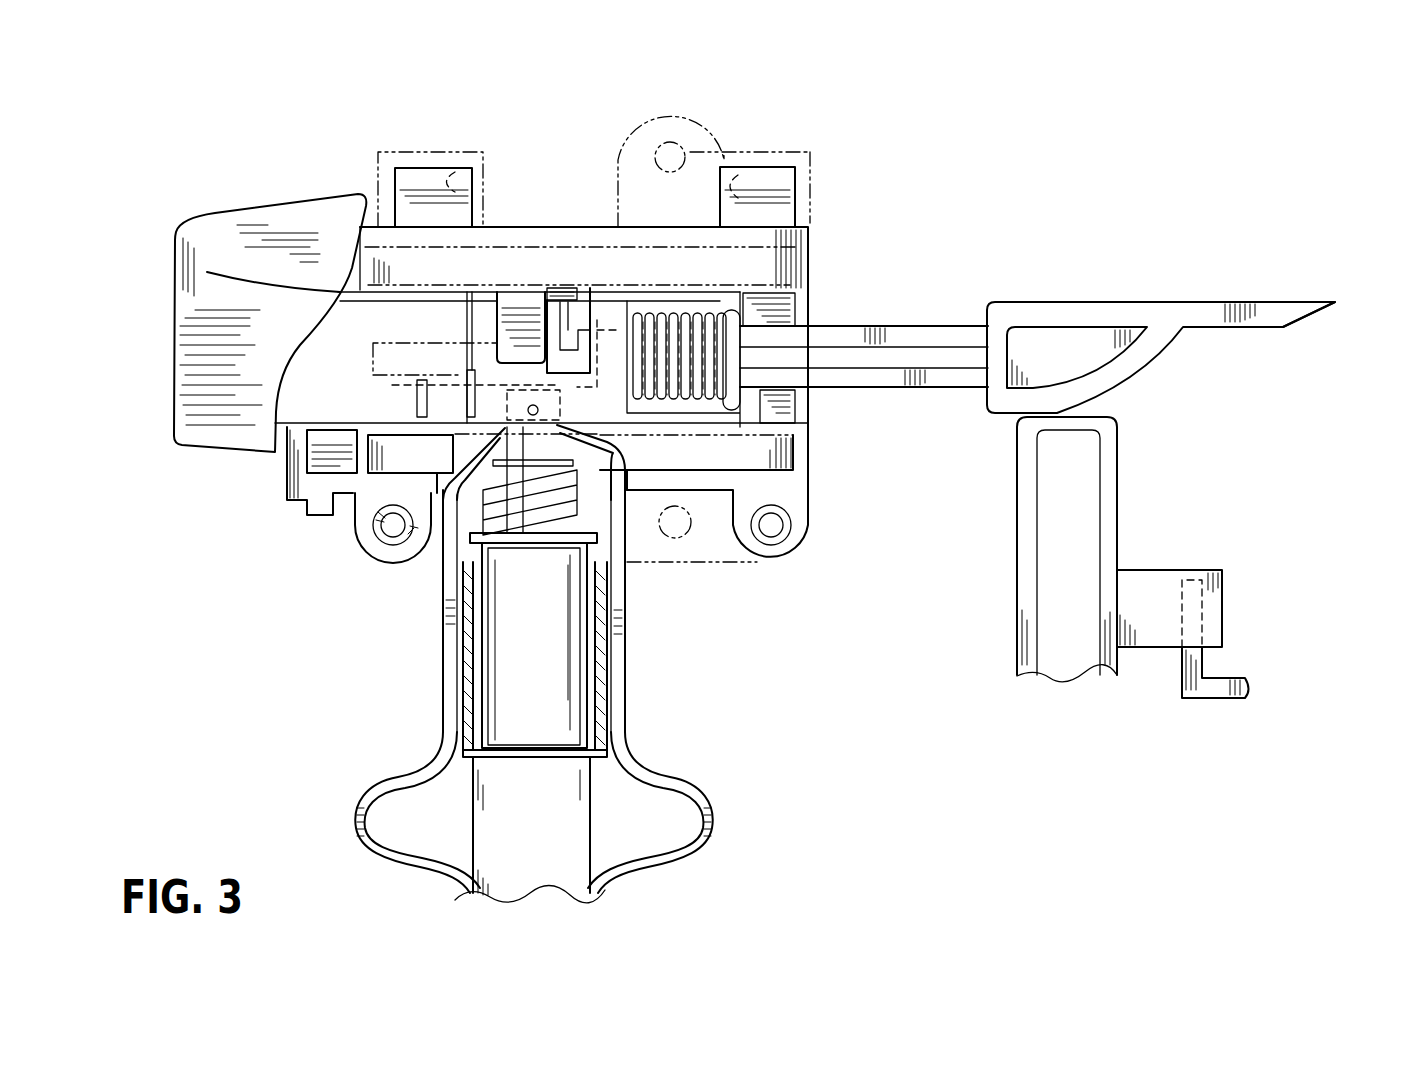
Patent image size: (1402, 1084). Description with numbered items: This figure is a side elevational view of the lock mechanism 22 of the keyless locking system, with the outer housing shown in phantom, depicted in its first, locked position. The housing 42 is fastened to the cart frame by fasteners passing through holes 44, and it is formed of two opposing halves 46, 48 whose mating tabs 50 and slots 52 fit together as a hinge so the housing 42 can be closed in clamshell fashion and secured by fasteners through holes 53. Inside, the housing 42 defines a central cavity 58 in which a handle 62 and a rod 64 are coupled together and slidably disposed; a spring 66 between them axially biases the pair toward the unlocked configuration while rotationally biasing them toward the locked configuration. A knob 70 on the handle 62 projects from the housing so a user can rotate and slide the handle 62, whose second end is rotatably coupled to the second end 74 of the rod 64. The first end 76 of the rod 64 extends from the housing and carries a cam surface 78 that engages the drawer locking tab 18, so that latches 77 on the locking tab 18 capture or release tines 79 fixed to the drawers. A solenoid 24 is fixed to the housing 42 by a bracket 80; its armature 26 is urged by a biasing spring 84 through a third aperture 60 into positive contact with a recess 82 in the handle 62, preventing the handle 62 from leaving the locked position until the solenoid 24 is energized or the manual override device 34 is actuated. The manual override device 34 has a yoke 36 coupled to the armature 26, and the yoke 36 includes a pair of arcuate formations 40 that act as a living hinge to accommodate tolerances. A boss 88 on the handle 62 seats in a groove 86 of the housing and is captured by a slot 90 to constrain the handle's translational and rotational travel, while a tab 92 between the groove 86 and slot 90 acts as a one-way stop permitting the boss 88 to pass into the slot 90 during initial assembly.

The drawer locking tab 18 is at (1017, 580).
The lock mechanism 22 is at (205, 684).
The solenoid 24 is at (483, 670).
The armature 26 is at (628, 450).
The manual override device 34 is at (446, 873).
The yoke 36 is at (625, 682).
The arcuate formations 40 is at (372, 784).
The housing 42 is at (845, 434).
The holes 44 is at (693, 140).
The first housing half 46 is at (815, 460).
The second housing half 48 is at (812, 169).
The mating tabs 50 is at (452, 168).
The slots 52 is at (472, 168).
The holes 53 is at (380, 535).
The central cavity 58 is at (745, 297).
The third aperture 60 is at (480, 530).
The handle 62 is at (293, 432).
The rod 64 is at (903, 327).
The spring 66 is at (693, 300).
The knob 70 is at (262, 218).
The second end of the rod 74 is at (598, 330).
The first end of the rod 76 is at (1338, 303).
The latches 77 is at (1160, 568).
The cam surface 78 is at (1140, 370).
The tines 79 is at (1222, 700).
The bracket 80 is at (515, 852).
The recess 82 is at (495, 380).
The biasing spring 84 is at (573, 512).
The groove 86 is at (328, 453).
The boss 88 is at (568, 290).
The slot 90 is at (373, 352).
The tab 92 is at (392, 386).